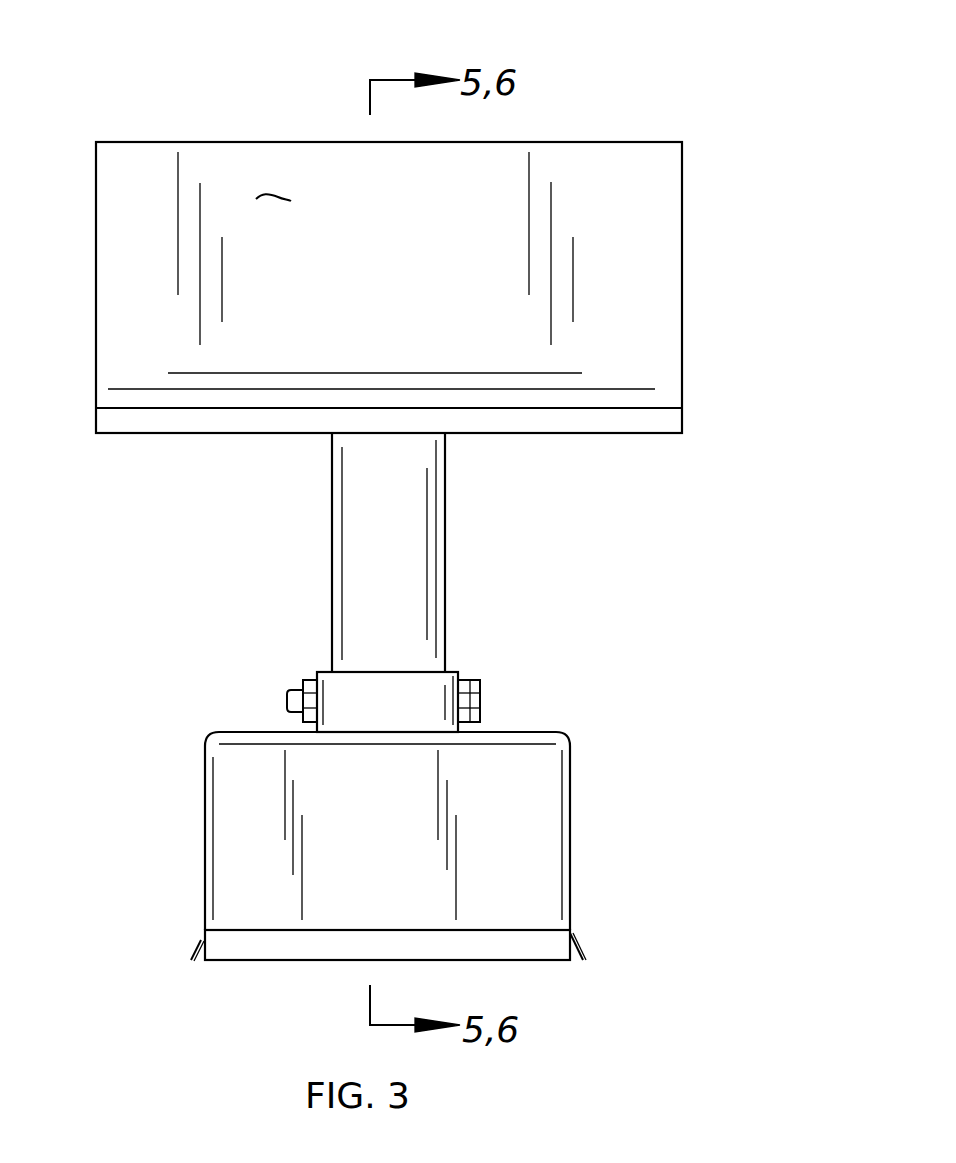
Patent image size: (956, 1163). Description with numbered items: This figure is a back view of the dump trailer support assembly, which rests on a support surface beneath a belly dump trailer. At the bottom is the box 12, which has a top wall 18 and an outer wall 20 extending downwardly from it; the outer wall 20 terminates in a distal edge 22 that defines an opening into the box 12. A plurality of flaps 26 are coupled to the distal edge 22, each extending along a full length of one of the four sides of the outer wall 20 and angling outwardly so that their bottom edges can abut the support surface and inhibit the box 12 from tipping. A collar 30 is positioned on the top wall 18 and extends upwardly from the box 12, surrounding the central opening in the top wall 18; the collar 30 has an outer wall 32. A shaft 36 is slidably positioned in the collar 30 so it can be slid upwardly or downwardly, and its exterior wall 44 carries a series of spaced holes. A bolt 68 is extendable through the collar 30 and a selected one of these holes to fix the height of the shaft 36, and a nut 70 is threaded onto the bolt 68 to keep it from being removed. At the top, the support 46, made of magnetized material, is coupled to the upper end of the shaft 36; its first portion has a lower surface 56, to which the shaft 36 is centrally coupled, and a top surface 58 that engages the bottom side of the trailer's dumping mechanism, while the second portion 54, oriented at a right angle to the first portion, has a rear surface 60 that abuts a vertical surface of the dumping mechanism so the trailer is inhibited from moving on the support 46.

The box 12 is at (208, 740).
The top wall 18 is at (550, 737).
The outer wall 20 is at (508, 813).
The distal edge 22 is at (296, 930).
The flaps 26 is at (200, 950).
The collar 30 is at (365, 670).
The outer wall of the collar 32 is at (413, 697).
The shaft 36 is at (332, 497).
The exterior wall 44 is at (405, 509).
The support 46 is at (683, 409).
The second portion 54 is at (622, 165).
The lower surface 56 is at (604, 434).
The top surface 58 is at (625, 408).
The rear surface 60 is at (278, 195).
The bolt 68 is at (482, 683).
The nut 70 is at (305, 680).